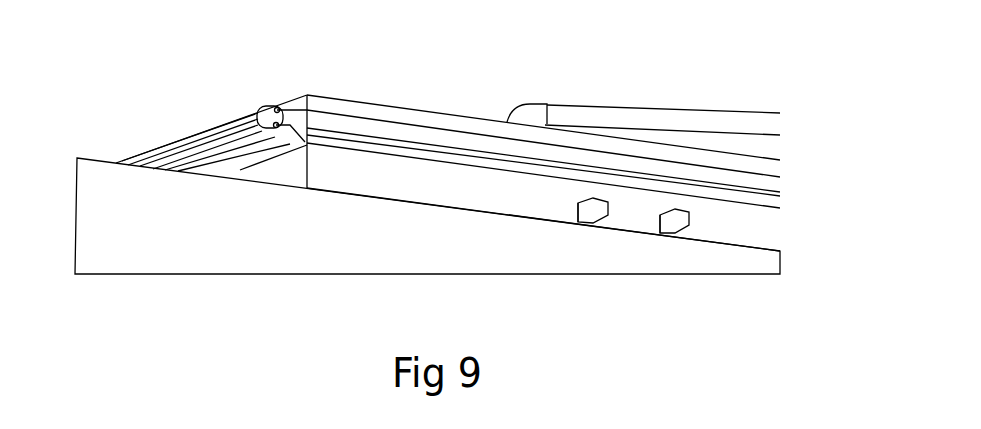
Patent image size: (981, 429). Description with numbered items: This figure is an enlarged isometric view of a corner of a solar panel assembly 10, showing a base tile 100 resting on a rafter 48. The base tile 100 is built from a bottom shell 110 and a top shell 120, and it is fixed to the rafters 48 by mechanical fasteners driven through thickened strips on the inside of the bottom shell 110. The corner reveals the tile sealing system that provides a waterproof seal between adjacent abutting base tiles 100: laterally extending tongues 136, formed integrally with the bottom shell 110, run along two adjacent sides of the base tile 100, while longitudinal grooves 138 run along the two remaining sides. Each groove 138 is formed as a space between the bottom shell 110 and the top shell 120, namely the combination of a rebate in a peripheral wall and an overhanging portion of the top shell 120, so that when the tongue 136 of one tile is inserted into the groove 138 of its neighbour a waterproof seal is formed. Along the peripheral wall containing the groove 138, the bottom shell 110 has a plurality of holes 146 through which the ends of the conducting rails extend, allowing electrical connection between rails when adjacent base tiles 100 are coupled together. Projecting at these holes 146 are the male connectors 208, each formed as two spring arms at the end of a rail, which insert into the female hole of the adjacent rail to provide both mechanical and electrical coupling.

The photovoltaic system 10 is at (748, 108).
The rafters 48 is at (97, 212).
The base tile 100 is at (436, 106).
The bottom shell 110 is at (750, 222).
The top shell 120 is at (326, 108).
The tongues 136 is at (173, 142).
The grooves 138 is at (783, 185).
The holes 146 is at (578, 208).
The male connector 208 is at (594, 223).